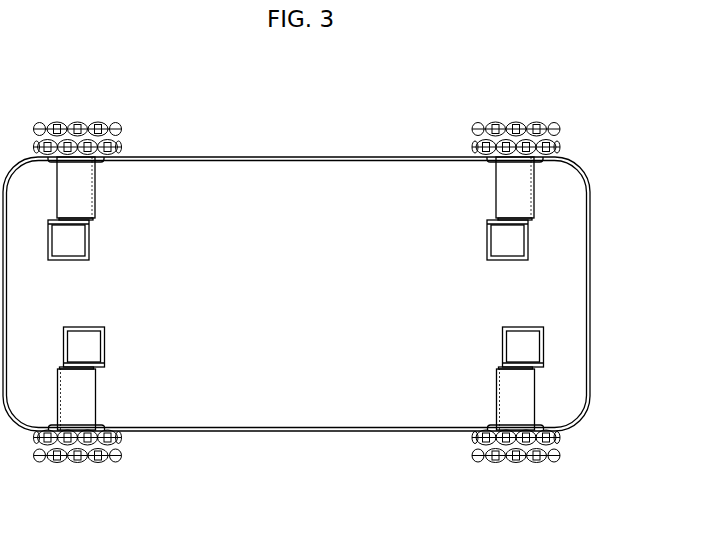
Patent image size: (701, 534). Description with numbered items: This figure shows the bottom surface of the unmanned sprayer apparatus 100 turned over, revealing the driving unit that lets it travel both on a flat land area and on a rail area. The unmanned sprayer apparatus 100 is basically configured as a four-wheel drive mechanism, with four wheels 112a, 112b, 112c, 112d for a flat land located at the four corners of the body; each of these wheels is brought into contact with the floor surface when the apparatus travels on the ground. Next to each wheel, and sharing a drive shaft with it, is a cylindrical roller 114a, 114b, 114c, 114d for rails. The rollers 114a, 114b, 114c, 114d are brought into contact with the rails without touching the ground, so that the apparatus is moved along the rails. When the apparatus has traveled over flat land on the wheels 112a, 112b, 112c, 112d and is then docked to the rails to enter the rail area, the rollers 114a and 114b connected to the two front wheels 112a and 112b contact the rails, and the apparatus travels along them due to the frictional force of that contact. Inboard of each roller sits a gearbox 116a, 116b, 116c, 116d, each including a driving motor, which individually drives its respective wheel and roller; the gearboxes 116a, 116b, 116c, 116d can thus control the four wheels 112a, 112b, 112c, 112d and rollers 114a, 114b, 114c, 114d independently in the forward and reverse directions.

The unmanned sprayer apparatus 100 is at (315, 127).
The wheel for a flat land 112a is at (92, 131).
The wheel for a flat land 112b is at (82, 462).
The wheel for a flat land 112c is at (517, 130).
The wheel for a flat land 112d is at (517, 460).
The roller for rails 114a is at (85, 195).
The roller for rails 114b is at (83, 393).
The roller for rails 114c is at (520, 195).
The roller for rails 114d is at (520, 391).
The gearbox 116a is at (73, 240).
The gearbox 116b is at (92, 350).
The gearbox 116c is at (515, 238).
The gearbox 116d is at (527, 348).